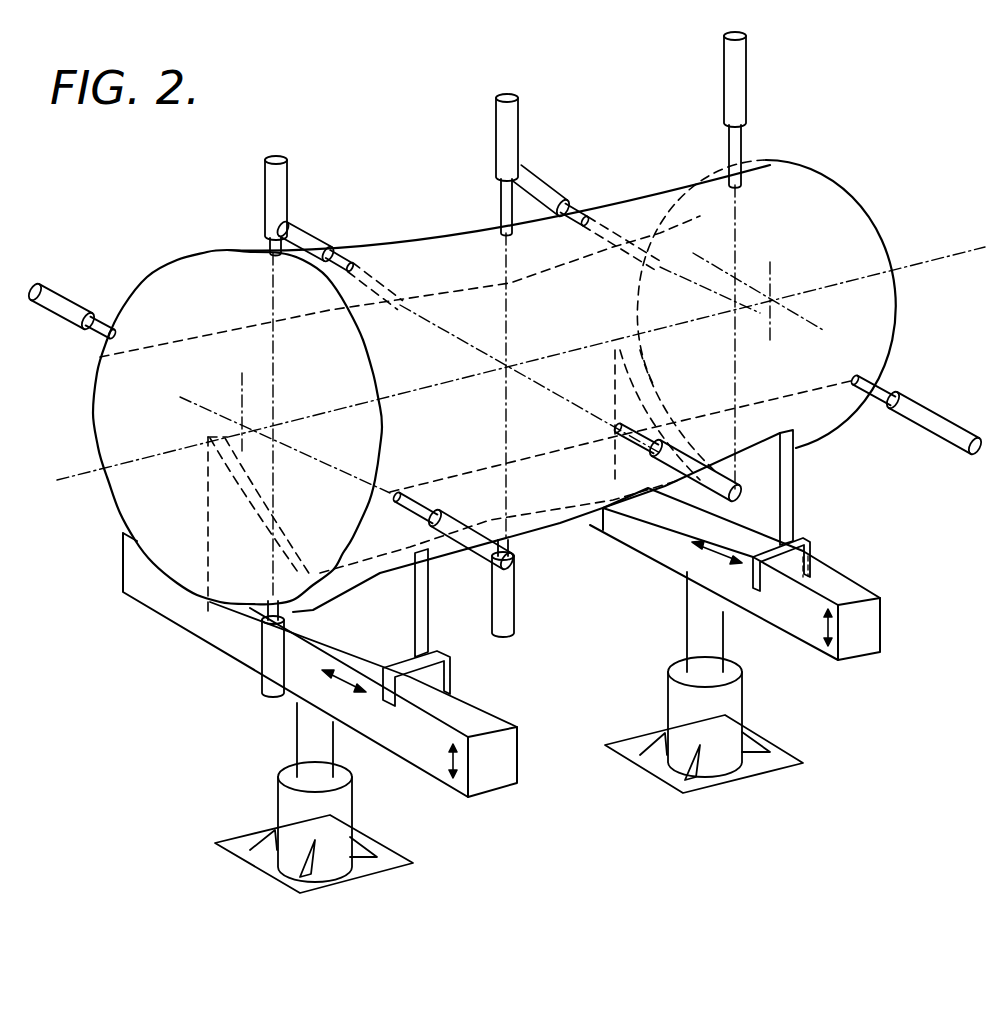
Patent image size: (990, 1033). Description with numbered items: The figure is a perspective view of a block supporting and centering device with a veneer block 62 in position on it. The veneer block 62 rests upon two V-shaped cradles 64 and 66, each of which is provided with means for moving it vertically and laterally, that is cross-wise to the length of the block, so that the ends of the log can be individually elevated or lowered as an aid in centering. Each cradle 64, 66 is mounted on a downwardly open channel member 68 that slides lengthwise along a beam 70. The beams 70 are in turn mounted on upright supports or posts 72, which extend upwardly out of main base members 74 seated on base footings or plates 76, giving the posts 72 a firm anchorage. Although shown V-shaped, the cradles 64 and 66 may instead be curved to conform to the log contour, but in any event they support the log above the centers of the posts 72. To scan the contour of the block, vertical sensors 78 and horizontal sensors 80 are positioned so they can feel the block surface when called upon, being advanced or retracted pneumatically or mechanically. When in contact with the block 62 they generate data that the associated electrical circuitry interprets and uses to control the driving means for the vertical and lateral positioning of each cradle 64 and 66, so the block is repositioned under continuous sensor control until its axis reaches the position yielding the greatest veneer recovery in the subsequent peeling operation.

The veneer block 62 is at (843, 190).
The V-shaped cradle 64 is at (388, 626).
The V-shaped cradle 66 is at (794, 484).
The downwardly open channel member 68 is at (452, 674).
The beam 70 is at (490, 782).
The upright support or post 72 is at (299, 732).
The main base member 74 is at (279, 804).
The base footing or plate 76 is at (360, 873).
The vertical sensor 78 is at (279, 184).
The horizontal sensor 80 is at (304, 247).